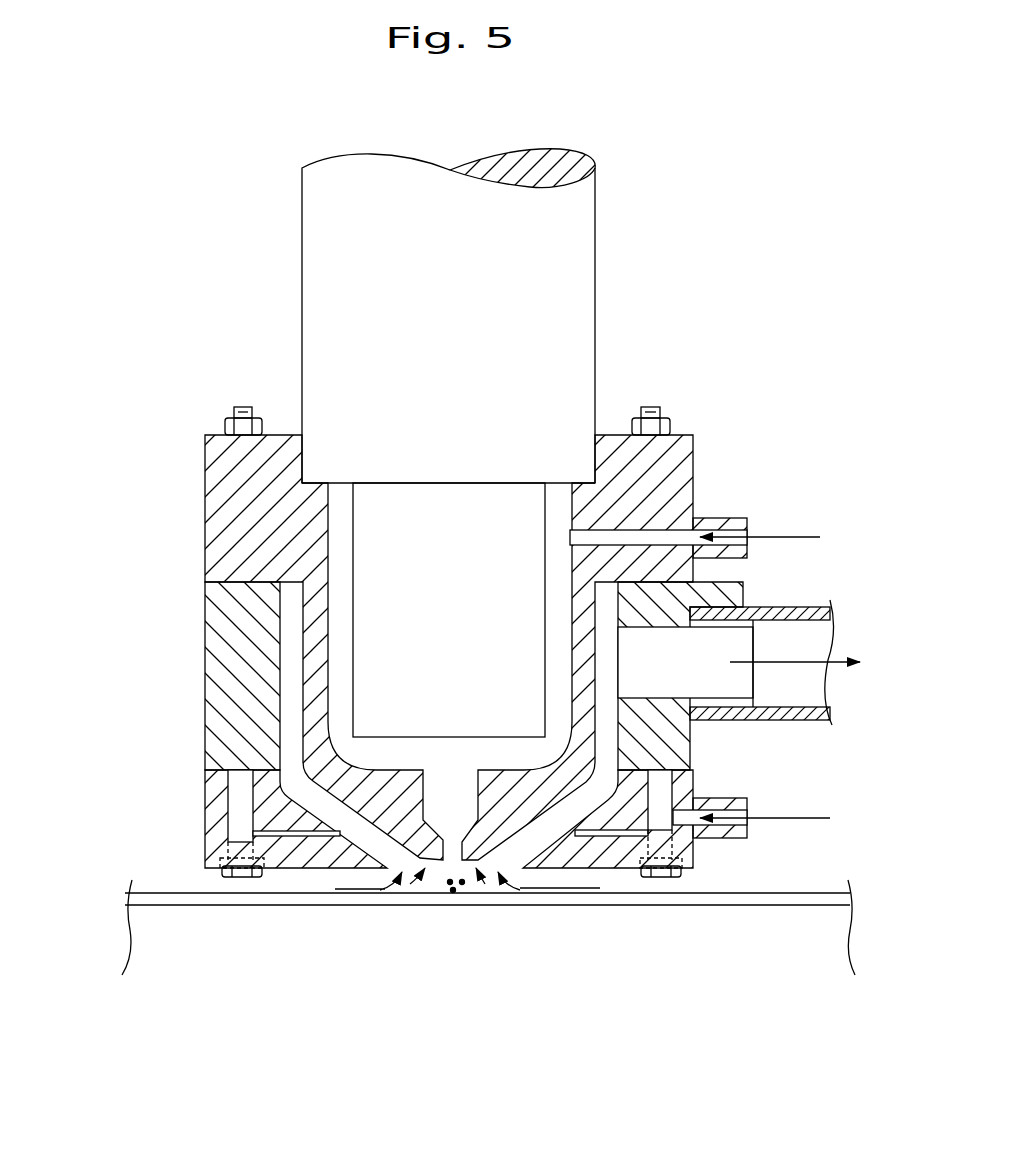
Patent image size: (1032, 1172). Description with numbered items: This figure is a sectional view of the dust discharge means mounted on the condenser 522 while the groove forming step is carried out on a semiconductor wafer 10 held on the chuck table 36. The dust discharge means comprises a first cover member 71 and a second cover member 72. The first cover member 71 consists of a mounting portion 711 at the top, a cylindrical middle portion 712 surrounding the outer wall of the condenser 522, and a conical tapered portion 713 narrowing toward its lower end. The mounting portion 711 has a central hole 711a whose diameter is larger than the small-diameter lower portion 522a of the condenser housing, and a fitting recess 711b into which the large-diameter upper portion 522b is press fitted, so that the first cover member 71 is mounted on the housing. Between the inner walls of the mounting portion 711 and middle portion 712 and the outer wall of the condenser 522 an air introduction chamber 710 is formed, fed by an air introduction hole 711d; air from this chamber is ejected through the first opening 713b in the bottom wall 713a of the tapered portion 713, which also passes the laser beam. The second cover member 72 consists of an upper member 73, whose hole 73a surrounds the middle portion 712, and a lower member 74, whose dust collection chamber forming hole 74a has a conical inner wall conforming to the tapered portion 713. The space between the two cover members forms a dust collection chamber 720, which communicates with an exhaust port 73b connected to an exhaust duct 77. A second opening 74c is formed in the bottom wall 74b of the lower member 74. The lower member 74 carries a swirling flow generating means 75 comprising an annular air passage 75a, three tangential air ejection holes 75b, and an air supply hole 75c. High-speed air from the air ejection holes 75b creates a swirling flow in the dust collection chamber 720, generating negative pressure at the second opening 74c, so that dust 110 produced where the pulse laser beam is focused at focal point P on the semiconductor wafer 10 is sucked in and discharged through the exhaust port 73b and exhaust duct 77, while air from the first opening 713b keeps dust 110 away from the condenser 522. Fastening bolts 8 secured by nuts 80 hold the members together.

The condenser 522 is at (535, 438).
The small-diameter lower portion 522a is at (483, 619).
The large-diameter upper portion 522b is at (580, 262).
The first cover member 71 is at (460, 676).
The mounting portion 711 is at (460, 676).
The hole 711a is at (330, 540).
The fitting recess 711b is at (303, 452).
The air introduction hole 711d is at (665, 500).
The air introduction chamber 710 is at (343, 598).
The middle portion 712 is at (318, 643).
The tapered portion 713 is at (345, 790).
The bottom wall 713a is at (456, 864).
The first opening 713b is at (458, 868).
The dust collection chamber 720 is at (290, 669).
The second cover member 72 is at (478, 783).
The upper member 73 is at (501, 676).
The hole 73a is at (283, 716).
The exhaust port 73b is at (650, 640).
The lower member 74 is at (272, 877).
The dust collection chamber forming hole 74a is at (322, 820).
The bottom wall 74b is at (575, 866).
The second opening 74c is at (447, 868).
The swirling flow generating means 75 is at (676, 862).
The annular air passage 75a is at (655, 773).
The air ejection holes 75b is at (603, 837).
The air supply hole 75c is at (720, 812).
The exhaust duct 77 is at (830, 610).
The nuts 80 is at (212, 425).
The fastening bolt 8 is at (228, 863).
The semiconductor wafer 10 is at (160, 893).
The chuck table 36 is at (130, 945).
The dust 110 is at (425, 878).
The focal point P is at (450, 893).